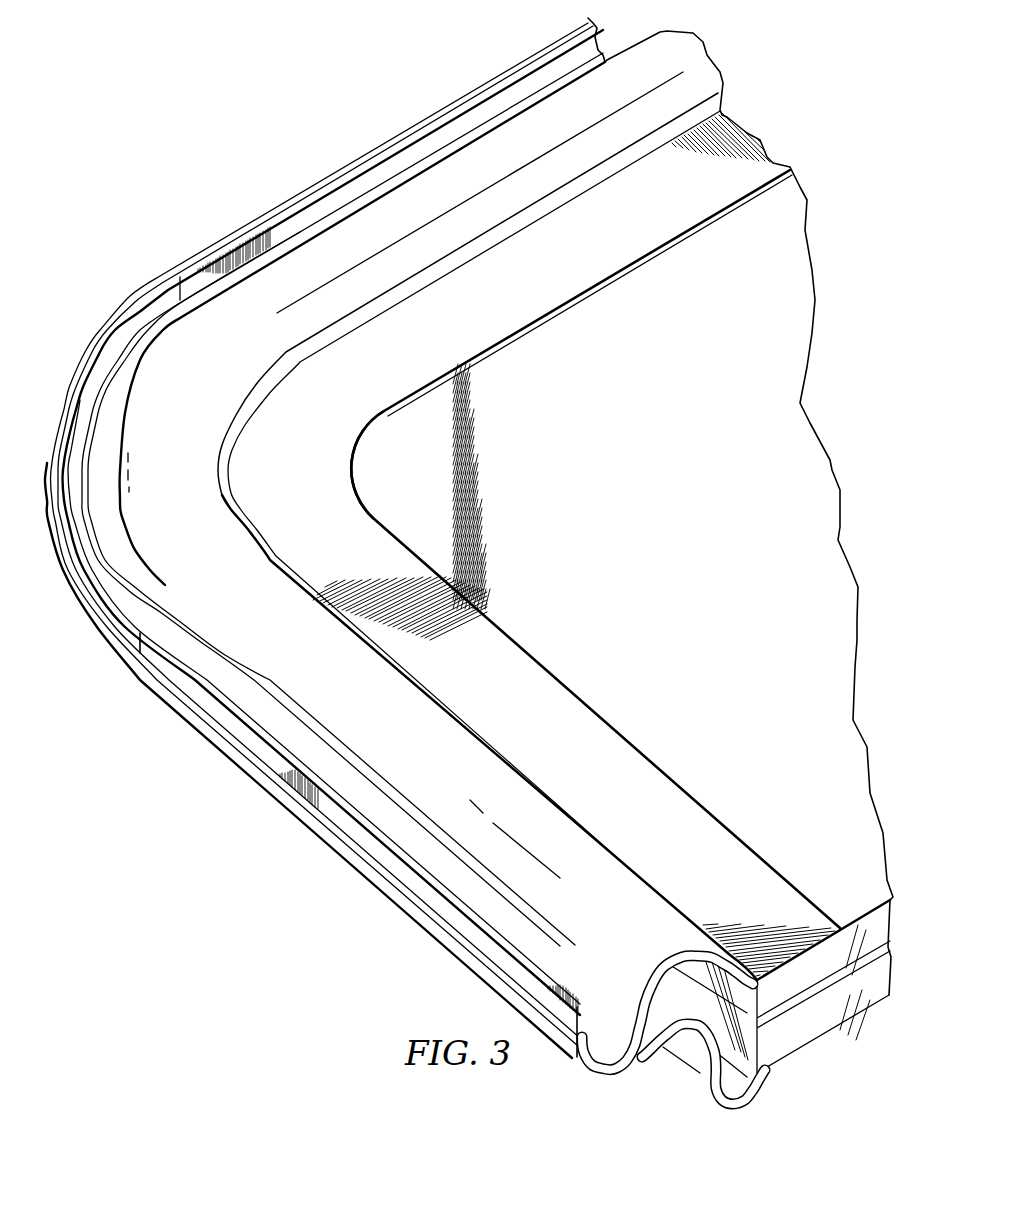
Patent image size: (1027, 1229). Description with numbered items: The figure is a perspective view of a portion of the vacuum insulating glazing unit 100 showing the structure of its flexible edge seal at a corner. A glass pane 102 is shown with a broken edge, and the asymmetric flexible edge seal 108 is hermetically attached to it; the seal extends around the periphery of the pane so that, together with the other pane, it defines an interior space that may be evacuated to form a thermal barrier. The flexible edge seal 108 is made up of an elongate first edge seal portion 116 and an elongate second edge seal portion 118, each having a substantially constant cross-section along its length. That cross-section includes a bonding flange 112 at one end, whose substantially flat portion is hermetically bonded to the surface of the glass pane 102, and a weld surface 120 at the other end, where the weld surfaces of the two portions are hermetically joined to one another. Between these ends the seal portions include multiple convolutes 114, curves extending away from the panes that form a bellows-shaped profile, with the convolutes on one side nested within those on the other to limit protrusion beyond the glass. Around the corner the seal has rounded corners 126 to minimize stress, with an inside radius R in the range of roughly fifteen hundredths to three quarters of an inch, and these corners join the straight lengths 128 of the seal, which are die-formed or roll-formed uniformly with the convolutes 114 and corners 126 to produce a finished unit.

The vacuum insulating glazing unit 100 is at (333, 72).
The glass pane 102 is at (797, 440).
The flexible edge seal 108 is at (454, 778).
The bonding flange 112 is at (517, 318).
The convolutes 114 is at (356, 228).
The first edge seal portion 116 is at (137, 596).
The second edge seal portion 118 is at (217, 740).
The weld surface 120 is at (330, 812).
The rounded corners 126 is at (370, 486).
The straight lengths 128 is at (618, 300).